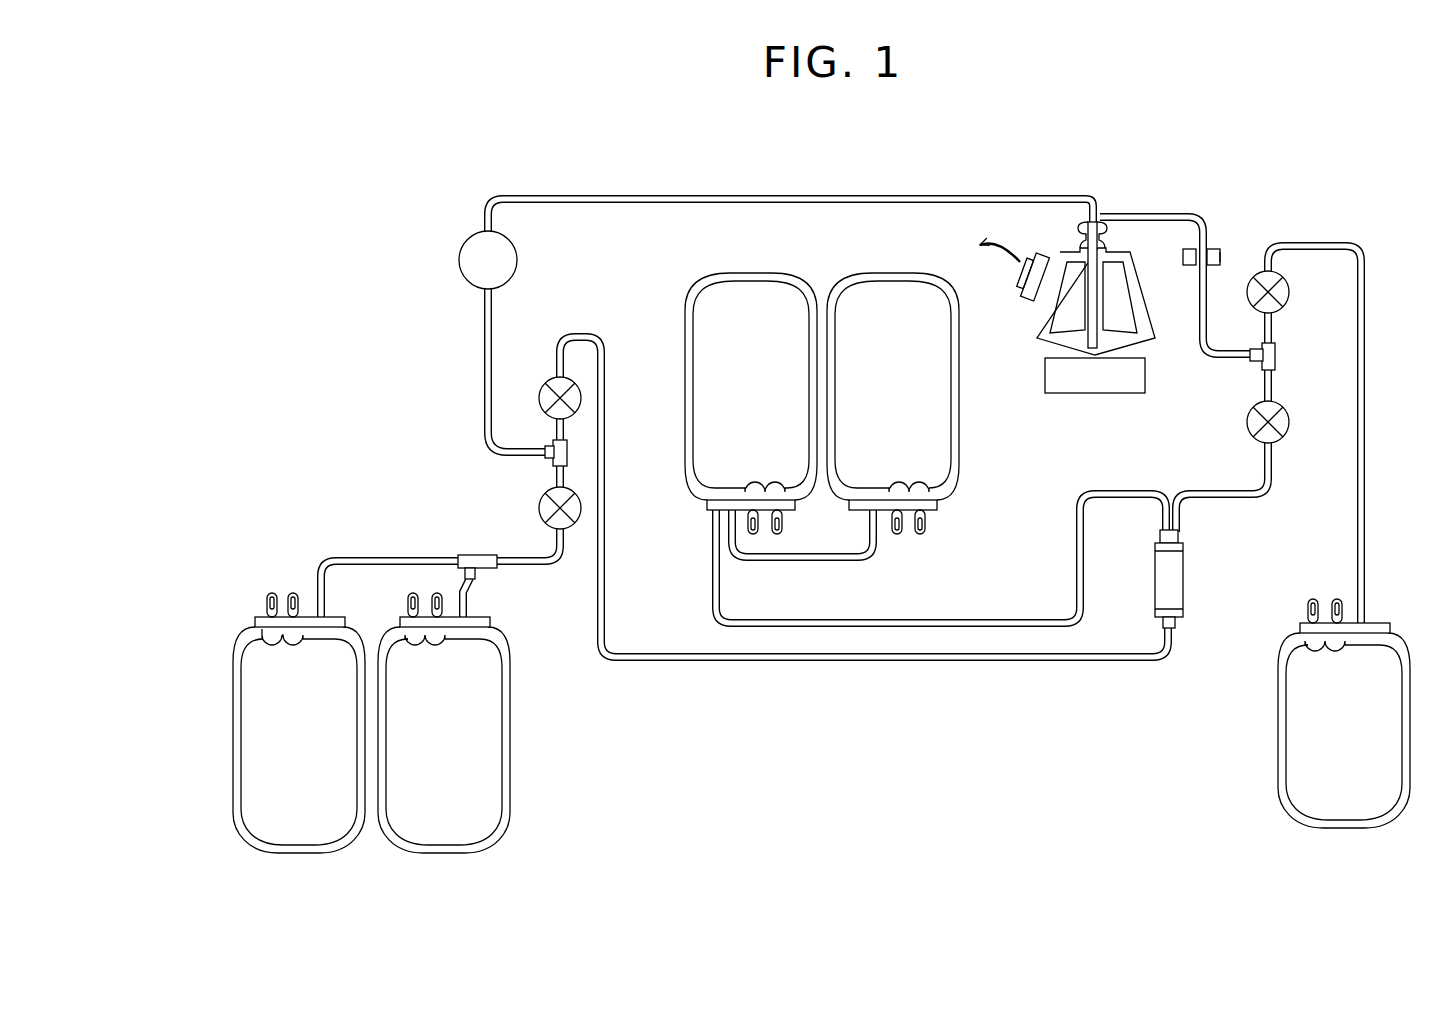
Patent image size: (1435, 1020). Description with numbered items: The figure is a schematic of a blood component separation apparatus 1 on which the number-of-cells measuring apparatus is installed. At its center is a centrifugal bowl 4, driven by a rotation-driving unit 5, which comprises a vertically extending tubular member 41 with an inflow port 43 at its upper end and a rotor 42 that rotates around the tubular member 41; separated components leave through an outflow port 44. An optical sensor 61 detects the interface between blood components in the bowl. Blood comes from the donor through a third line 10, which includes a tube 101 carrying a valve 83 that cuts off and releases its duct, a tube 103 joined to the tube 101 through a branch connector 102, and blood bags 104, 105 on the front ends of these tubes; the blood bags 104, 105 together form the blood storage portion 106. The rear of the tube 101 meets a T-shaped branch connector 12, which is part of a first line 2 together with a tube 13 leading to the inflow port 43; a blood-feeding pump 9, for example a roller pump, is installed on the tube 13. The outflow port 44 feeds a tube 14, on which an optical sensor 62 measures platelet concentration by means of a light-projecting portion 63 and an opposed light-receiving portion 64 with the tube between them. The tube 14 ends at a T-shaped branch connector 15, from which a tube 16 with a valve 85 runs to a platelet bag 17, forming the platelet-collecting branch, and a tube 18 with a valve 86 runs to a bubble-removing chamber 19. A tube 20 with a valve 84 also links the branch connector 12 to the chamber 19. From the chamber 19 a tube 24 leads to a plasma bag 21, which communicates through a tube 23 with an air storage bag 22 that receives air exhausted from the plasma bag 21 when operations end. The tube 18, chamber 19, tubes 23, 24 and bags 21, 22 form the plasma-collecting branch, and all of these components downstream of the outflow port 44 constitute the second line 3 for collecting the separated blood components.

The blood component separation apparatus 1 is at (1108, 744).
The first line 2 is at (676, 191).
The second line 3 is at (1241, 498).
The centrifugal bowl 4 is at (1083, 240).
The rotation-driving unit 5 is at (1080, 383).
The pump 9 is at (512, 256).
The third line 10 is at (367, 552).
The branch connector 12 is at (575, 452).
The tube 13 is at (817, 194).
The tube 14 is at (1216, 238).
The branch connector 15 is at (1278, 353).
The tube 16 is at (1340, 244).
The platelet bag 17 is at (1283, 738).
The tube 18 is at (1195, 490).
The bubble-removing chamber 19 is at (1156, 582).
The tube 20 is at (665, 653).
The plasma bag 21 is at (752, 300).
The air storage bag 22 is at (893, 300).
The tube 23 is at (832, 558).
The tube 24 is at (1030, 620).
The tubular member 41 is at (1100, 310).
The rotor 42 is at (1045, 325).
The inflow port 43 is at (1085, 197).
The outflow port 44 is at (1103, 228).
The optical sensor 61 is at (1040, 256).
The optical sensor 62 is at (1214, 247).
The light-projecting portion 63 is at (1222, 257).
The light-receiving portion 64 is at (1190, 247).
The valve 83 is at (542, 510).
The valve 84 is at (548, 384).
The valve 85 is at (1282, 294).
The valve 86 is at (1252, 418).
The tube 101 is at (320, 556).
The branch connector 102 is at (474, 558).
The tube 103 is at (466, 592).
The blood bag 104 is at (305, 830).
The blood bag 105 is at (440, 825).
The blood storage portion 106 is at (515, 777).